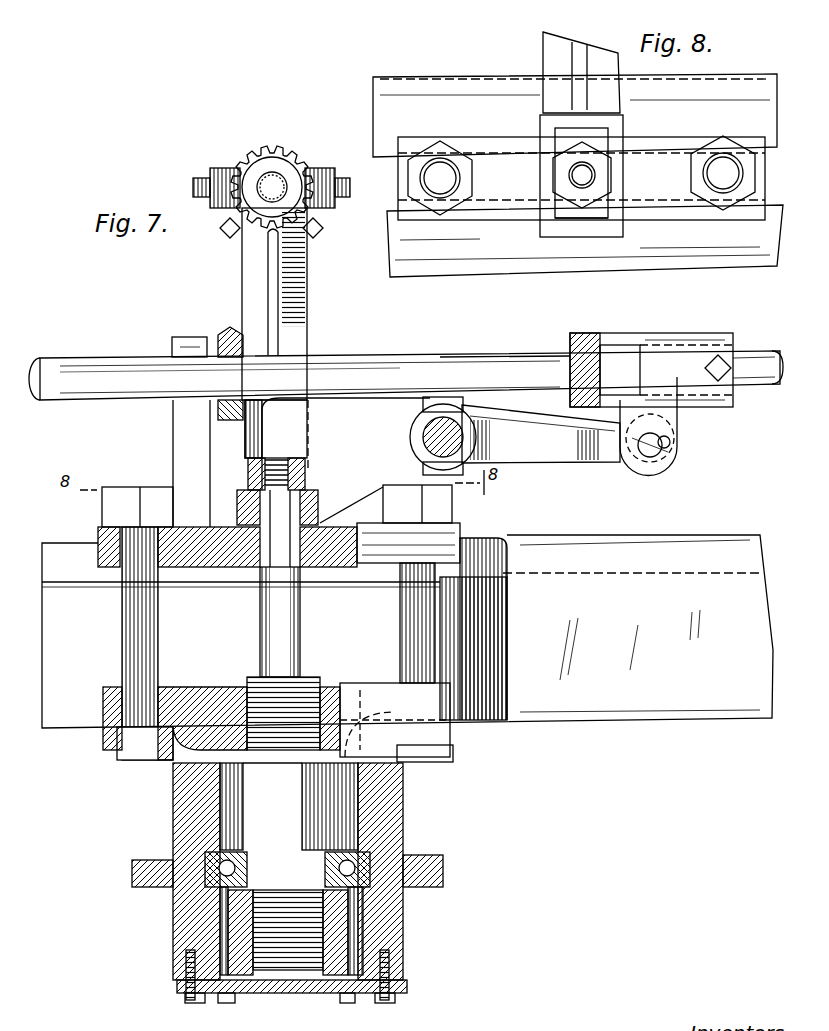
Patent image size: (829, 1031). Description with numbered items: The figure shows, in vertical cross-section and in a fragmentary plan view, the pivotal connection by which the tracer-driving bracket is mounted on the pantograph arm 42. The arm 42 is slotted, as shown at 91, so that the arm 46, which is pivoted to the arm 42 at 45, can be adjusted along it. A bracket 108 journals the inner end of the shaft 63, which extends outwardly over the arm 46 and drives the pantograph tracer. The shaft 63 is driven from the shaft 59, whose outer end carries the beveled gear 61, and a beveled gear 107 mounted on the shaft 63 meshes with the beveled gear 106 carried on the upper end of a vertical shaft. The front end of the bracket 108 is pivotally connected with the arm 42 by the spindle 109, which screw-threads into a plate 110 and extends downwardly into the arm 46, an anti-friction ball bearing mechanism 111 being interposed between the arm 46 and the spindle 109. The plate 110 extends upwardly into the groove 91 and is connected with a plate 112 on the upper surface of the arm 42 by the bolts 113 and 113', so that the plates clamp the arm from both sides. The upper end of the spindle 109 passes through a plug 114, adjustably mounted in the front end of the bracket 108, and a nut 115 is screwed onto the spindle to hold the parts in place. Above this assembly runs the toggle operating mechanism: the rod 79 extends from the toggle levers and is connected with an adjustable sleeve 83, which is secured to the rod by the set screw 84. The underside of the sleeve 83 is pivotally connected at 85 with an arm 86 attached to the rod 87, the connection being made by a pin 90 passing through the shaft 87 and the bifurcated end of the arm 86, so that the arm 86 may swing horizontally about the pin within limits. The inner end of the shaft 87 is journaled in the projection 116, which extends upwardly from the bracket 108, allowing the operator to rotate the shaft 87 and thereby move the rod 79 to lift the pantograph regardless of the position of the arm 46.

In FIG. 8, the pantograph arm 42 is at (597, 270).
In FIG. 7, the pantograph arm 42 is at (670, 719).
In FIG. 7, the pivot 45 is at (403, 905).
In FIG. 7, the arm 46 is at (440, 851).
In FIG. 7, the shaft 59 is at (406, 363).
In FIG. 7, the beveled gear 61 is at (228, 325).
In FIG. 7, the shaft 63 is at (283, 172).
In FIG. 7, the rod 79 is at (503, 357).
In FIG. 7, the adjustable sleeve 83 is at (666, 333).
In FIG. 7, the set screw 84 is at (732, 357).
In FIG. 7, the pivotal connection 85 is at (657, 453).
In FIG. 7, the arm 86 is at (541, 443).
In FIG. 7, the rod 87 is at (423, 437).
In FIG. 7, the pin 90 is at (448, 398).
In FIG. 8, the slot 91 is at (393, 157).
In FIG. 7, the slot 91 is at (480, 546).
In FIG. 7, the beveled gear 106 is at (230, 233).
In FIG. 7, the beveled gear 107 is at (240, 156).
In FIG. 8, the bracket 108 is at (590, 26).
In FIG. 7, the bracket 108 is at (307, 300).
In FIG. 7, the spindle 109 is at (268, 645).
In FIG. 7, the plate 110 is at (460, 712).
In FIG. 7, the anti-friction ball bearing mechanism 111 is at (350, 858).
In FIG. 8, the plate 112 is at (740, 136).
In FIG. 7, the plate 112 is at (98, 527).
In FIG. 8, the bolt 113 is at (415, 198).
In FIG. 7, the bolt 113 is at (128, 637).
In FIG. 8, the bolt 113' is at (726, 218).
In FIG. 7, the bolt 113' is at (444, 629).
In FIG. 8, the plug 114 is at (545, 218).
In FIG. 7, the plug 114 is at (245, 493).
In FIG. 8, the nut 115 is at (578, 210).
In FIG. 7, the nut 115 is at (255, 460).
In FIG. 7, the projection 116 is at (365, 398).